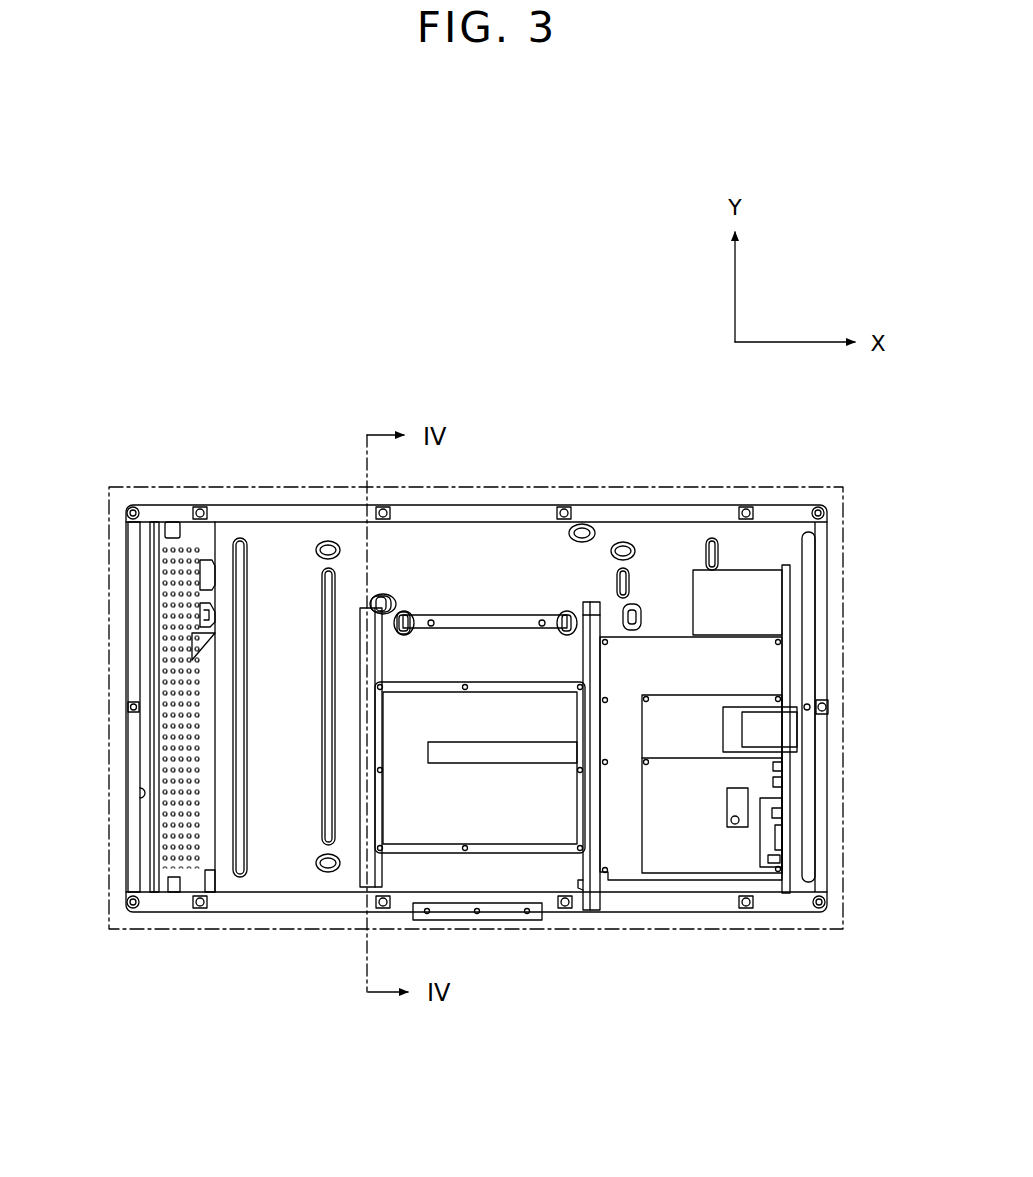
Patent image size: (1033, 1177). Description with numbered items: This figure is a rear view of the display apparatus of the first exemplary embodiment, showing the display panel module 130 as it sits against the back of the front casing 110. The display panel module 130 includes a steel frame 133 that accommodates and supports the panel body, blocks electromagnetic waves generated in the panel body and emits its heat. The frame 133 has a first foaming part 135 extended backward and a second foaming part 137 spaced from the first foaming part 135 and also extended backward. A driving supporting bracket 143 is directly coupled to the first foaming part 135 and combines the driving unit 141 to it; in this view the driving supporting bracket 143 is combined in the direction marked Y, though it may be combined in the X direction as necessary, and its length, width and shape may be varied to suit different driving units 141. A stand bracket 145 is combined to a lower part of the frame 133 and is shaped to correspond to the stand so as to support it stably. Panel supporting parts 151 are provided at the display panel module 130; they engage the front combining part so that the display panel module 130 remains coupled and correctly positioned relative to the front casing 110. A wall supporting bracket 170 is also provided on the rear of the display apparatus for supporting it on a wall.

The front casing 110 is at (109, 612).
The display panel module 130 is at (608, 514).
The frame 133 is at (673, 552).
The first foaming part 135 is at (353, 603).
The second foaming part 137 is at (405, 613).
The driving unit 141 is at (517, 815).
The driving supporting bracket 143 is at (593, 750).
The stand bracket 145 is at (507, 915).
The panel supporting part 151 is at (197, 507).
The wall supporting bracket 170 is at (503, 620).